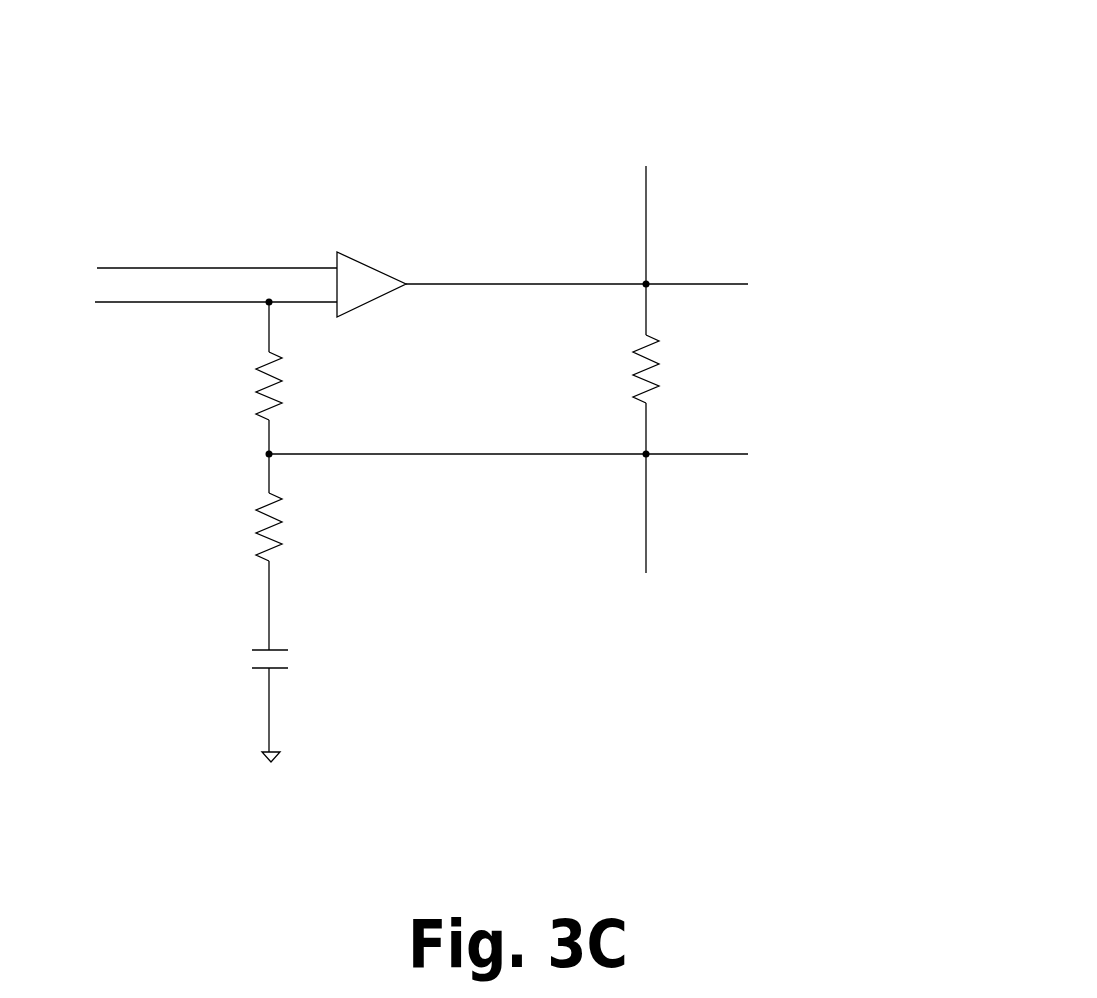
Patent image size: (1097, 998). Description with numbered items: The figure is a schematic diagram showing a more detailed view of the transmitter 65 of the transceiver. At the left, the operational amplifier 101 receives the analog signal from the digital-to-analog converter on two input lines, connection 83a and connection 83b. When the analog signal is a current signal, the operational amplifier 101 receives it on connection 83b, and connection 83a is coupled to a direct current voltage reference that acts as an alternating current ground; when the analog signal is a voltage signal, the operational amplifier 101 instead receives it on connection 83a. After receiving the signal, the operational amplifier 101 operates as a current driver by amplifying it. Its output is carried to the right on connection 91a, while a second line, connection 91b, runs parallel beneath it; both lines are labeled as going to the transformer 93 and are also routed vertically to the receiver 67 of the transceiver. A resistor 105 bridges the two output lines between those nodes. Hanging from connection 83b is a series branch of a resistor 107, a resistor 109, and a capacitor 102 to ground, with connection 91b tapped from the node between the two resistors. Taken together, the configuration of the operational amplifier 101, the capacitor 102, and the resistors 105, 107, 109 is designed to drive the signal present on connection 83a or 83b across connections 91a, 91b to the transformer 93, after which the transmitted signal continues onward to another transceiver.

The transmitter 65 is at (499, 110).
The connection 83a is at (157, 268).
The connection 83b is at (157, 302).
The operational amplifier 101 is at (355, 252).
The connection 91a is at (705, 284).
The connection 91b is at (432, 454).
The receiver 67 is at (643, 370).
The transformer 93 is at (867, 369).
The resistor 105 is at (692, 351).
The resistor 107 is at (225, 387).
The resistor 109 is at (225, 523).
The capacitor 102 is at (225, 659).